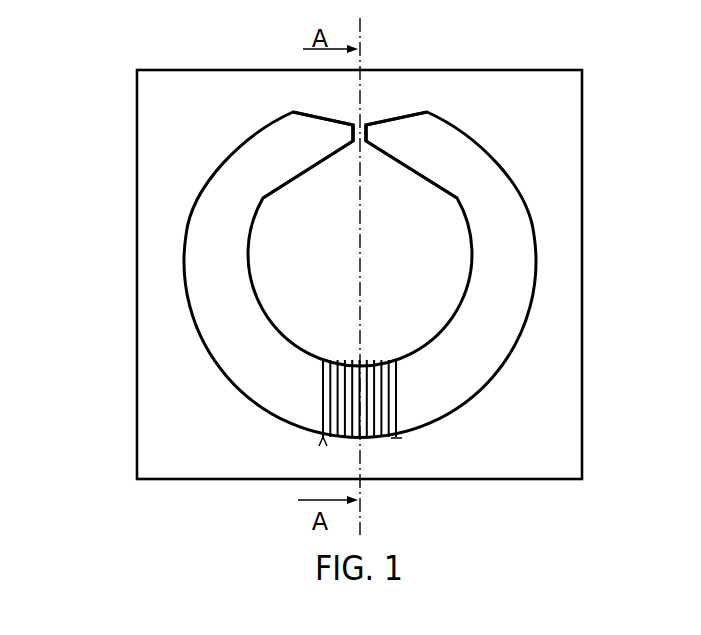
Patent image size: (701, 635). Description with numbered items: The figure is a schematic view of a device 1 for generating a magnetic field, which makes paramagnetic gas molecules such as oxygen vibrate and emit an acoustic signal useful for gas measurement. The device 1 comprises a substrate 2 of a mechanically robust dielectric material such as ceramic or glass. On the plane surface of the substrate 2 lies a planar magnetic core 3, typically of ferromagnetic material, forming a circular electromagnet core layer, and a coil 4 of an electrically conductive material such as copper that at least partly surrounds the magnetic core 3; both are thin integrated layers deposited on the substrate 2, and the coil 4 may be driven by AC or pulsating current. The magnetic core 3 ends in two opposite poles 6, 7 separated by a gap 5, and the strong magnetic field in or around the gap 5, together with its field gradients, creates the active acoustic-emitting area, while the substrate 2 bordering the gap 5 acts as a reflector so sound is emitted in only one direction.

The device for generating a magnetic field 1 is at (77, 344).
The substrate 2 is at (153, 133).
The magnetic core 3 is at (440, 390).
The coil 4 is at (320, 432).
The gap 5 is at (365, 125).
The pole 6 is at (293, 125).
The pole 7 is at (426, 128).